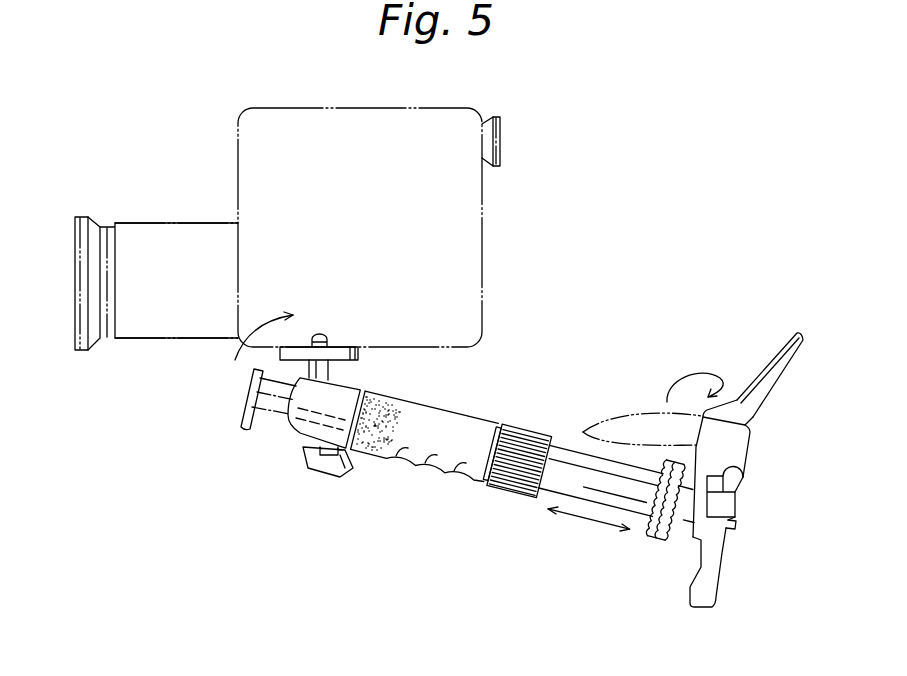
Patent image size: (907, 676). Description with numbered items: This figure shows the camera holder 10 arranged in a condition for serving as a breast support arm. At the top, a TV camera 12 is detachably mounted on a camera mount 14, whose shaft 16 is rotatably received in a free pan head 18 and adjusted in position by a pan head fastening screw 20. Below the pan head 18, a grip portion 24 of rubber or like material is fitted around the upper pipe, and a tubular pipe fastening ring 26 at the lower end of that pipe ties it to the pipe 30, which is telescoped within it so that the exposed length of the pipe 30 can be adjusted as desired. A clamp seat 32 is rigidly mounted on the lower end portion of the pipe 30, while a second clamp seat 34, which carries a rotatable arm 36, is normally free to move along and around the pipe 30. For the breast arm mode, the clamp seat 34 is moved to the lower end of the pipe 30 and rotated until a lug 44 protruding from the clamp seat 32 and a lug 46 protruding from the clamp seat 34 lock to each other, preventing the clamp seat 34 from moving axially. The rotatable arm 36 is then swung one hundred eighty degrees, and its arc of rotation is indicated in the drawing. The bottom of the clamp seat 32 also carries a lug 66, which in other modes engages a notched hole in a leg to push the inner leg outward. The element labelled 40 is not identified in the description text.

The camera holder 10 is at (558, 358).
The TV camera 12 is at (483, 248).
The camera mount 14 is at (358, 354).
The shaft 16 is at (330, 370).
The free pan head 18 is at (294, 426).
The pan head fastening screw 20 is at (327, 465).
The grip portion 24 is at (408, 467).
The pipe fastening ring 26 is at (505, 488).
The pipe 30 is at (597, 505).
The clamp seat 32 is at (713, 586).
The clamp seat 34 is at (750, 428).
The rotatable arm 36 is at (773, 371).
The ratchet wheel 40 is at (655, 540).
The lug 44 is at (730, 470).
The lug 46 is at (737, 488).
The lug 66 is at (733, 523).